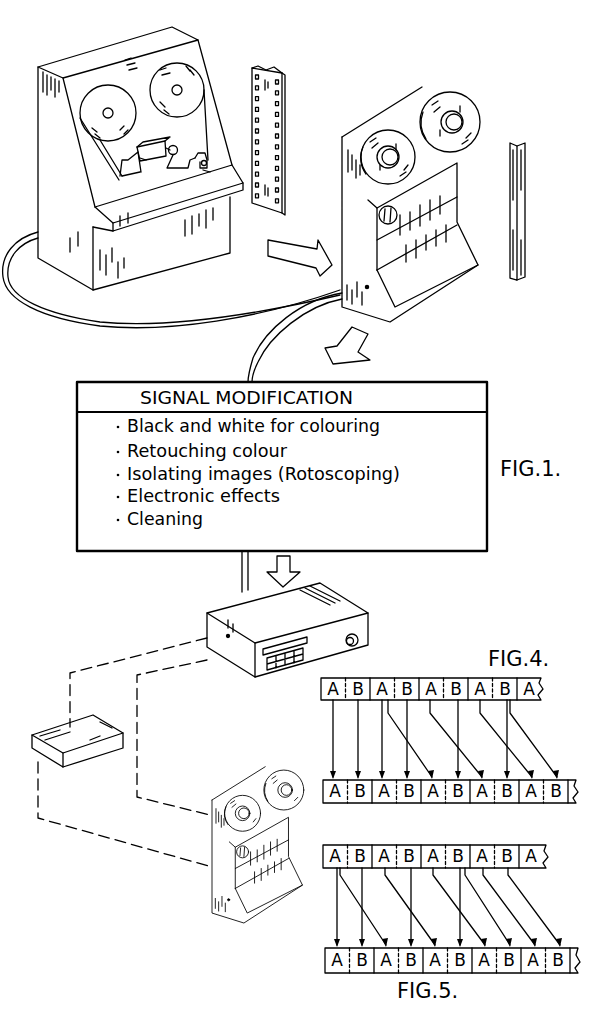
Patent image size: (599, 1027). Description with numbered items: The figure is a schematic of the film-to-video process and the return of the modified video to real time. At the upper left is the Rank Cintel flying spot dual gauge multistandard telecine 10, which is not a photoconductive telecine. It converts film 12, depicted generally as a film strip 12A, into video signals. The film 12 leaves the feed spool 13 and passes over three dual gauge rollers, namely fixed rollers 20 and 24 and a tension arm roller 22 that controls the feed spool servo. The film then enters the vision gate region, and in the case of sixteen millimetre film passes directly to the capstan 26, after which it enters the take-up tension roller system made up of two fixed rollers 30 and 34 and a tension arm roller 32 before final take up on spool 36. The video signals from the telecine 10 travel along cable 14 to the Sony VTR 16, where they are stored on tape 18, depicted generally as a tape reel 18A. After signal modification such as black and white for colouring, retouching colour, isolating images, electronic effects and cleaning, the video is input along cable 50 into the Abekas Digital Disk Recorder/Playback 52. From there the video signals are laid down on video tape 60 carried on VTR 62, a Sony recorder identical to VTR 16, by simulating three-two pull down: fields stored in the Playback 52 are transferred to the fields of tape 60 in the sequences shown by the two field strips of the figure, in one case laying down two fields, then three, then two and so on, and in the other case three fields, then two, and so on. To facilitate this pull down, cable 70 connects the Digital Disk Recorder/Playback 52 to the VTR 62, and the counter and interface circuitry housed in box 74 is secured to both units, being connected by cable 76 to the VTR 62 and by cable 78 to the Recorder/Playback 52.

The telecine 10 is at (197, 40).
The film 12 is at (207, 72).
The film (general depiction) 12A is at (283, 85).
The feed spool 13 is at (170, 72).
The cable 14 is at (182, 322).
The VTR (Video Tape Recorder) 16 is at (399, 85).
The tape 18 is at (358, 163).
The tape (general depiction) 18A is at (525, 163).
The fixed dual gauge roller 20 is at (206, 172).
The tension arm roller 22 is at (205, 153).
The fixed dual gauge roller 24 is at (194, 170).
The capstan 26 is at (172, 155).
The fixed roller 30 is at (140, 160).
The tension arm roller 32 is at (124, 160).
The fixed roller 34 is at (120, 178).
The take-up spool 36 is at (103, 90).
The cable 50 is at (250, 358).
The Digital Disk Recorder/Playback 52 is at (384, 622).
The video tape 60 is at (222, 837).
The VTR 62 is at (233, 781).
The cable 70 is at (138, 757).
The box 74 is at (93, 763).
The cable 76 is at (124, 854).
The cable 78 is at (93, 664).